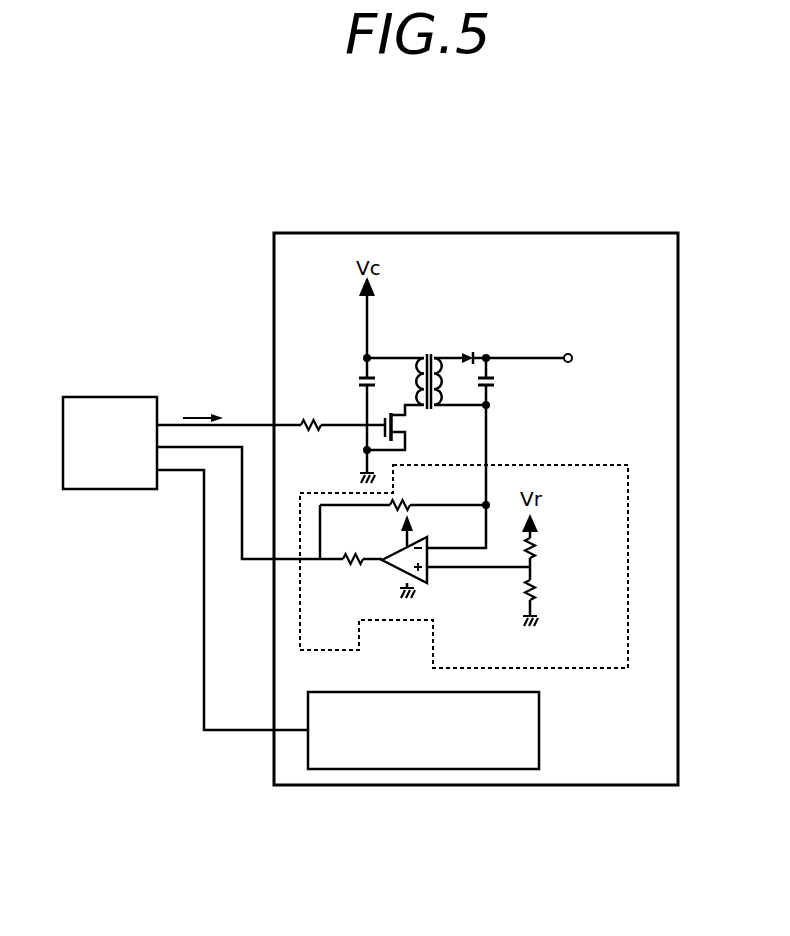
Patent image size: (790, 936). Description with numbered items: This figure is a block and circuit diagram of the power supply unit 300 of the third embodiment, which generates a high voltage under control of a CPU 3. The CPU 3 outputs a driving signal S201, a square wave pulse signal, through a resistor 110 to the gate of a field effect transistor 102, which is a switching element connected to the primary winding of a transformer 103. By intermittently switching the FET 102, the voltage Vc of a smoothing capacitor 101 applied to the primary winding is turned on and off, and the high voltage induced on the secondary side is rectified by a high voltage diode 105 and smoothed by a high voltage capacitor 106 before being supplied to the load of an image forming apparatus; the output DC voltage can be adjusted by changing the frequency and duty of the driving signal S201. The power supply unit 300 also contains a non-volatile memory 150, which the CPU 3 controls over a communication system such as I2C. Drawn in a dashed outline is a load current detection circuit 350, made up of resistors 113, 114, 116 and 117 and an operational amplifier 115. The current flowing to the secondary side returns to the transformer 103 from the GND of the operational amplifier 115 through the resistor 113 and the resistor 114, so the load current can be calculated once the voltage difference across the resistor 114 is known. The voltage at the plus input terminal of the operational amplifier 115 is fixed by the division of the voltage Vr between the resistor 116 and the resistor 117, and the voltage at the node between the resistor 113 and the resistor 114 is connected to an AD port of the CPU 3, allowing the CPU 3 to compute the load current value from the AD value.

The CPU 3 is at (124, 397).
The power supply unit 300 is at (531, 232).
The driving signal S201 is at (205, 407).
The smoothing capacitor 101 is at (359, 381).
The field effect transistor (FET) 102 is at (406, 432).
The transformer 103 is at (429, 355).
The high voltage diode 105 is at (472, 353).
The high voltage capacitor 106 is at (494, 384).
The resistor 110 is at (312, 430).
The resistor 113 is at (350, 565).
The resistor 114 is at (412, 500).
The operational amplifier 115 is at (428, 584).
The resistor 116 is at (537, 549).
The resistor 117 is at (537, 592).
The non-volatile memory 150 is at (370, 691).
The load current detection circuit 350 is at (572, 465).